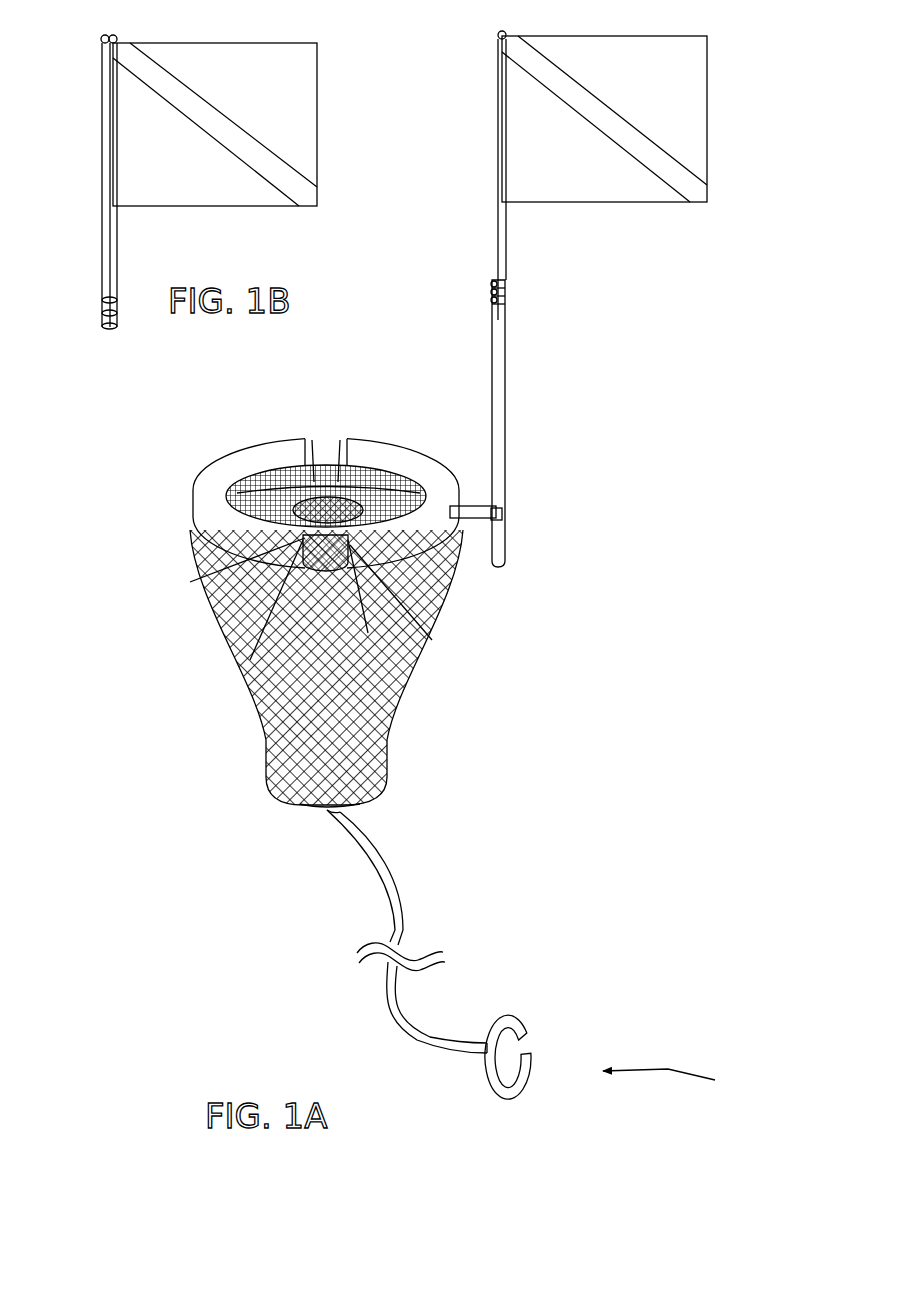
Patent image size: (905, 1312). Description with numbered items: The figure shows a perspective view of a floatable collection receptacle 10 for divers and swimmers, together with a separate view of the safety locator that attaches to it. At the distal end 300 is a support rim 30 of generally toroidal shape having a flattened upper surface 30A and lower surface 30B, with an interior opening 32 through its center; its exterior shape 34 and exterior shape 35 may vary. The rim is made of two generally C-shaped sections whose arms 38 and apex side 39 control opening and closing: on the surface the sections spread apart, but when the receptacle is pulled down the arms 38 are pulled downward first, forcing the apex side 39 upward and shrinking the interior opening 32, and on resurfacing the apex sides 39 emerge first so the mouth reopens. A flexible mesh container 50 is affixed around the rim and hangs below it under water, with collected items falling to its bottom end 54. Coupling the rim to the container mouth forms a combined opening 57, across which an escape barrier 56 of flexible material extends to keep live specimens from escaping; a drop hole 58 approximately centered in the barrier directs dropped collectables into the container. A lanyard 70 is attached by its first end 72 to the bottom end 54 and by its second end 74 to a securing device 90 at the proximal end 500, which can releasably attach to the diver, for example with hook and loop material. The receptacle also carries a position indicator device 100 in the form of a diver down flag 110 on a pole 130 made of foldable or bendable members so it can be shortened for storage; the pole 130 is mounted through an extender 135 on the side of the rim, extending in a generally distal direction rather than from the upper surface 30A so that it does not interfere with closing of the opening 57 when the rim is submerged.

In FIG. 1A, the floatable collection receptacle 10 is at (316, 723).
In FIG. 1A, the support rim 30 is at (324, 512).
In FIG. 1A, the upper surface 30A is at (212, 498).
In FIG. 1A, the lower surface 30B is at (458, 600).
In FIG. 1A, the interior opening 32 is at (375, 455).
In FIG. 1A, the exterior shape 34 is at (218, 532).
In FIG. 1A, the exterior shape 35 is at (268, 470).
In FIG. 1A, the arms 38 is at (295, 538).
In FIG. 1A, the apex side 39 is at (197, 493).
In FIG. 1A, the container 50 is at (317, 603).
In FIG. 1A, the bottom end 54 is at (312, 810).
In FIG. 1A, the escape barrier 56 is at (323, 467).
In FIG. 1A, the combined opening 57 is at (227, 627).
In FIG. 1A, the drop hole 58 is at (330, 467).
In FIG. 1A, the lanyard 70 is at (396, 953).
In FIG. 1A, the first end 72 is at (340, 813).
In FIG. 1A, the second end 74 is at (478, 1053).
In FIG. 1A, the securing device 90 is at (507, 1015).
In FIG. 1B, the position indicator device 100 is at (240, 182).
In FIG. 1A, the position indicator device 100 is at (654, 299).
In FIG. 1B, the diver down flag 110 is at (198, 178).
In FIG. 1A, the diver down flag 110 is at (668, 92).
In FIG. 1B, the pole 130 is at (105, 263).
In FIG. 1A, the pole 130 is at (497, 417).
In FIG. 1A, the extender 135 is at (470, 521).
In FIG. 1A, the distal end 300 is at (634, 321).
In FIG. 1A, the proximal end 500 is at (674, 1087).